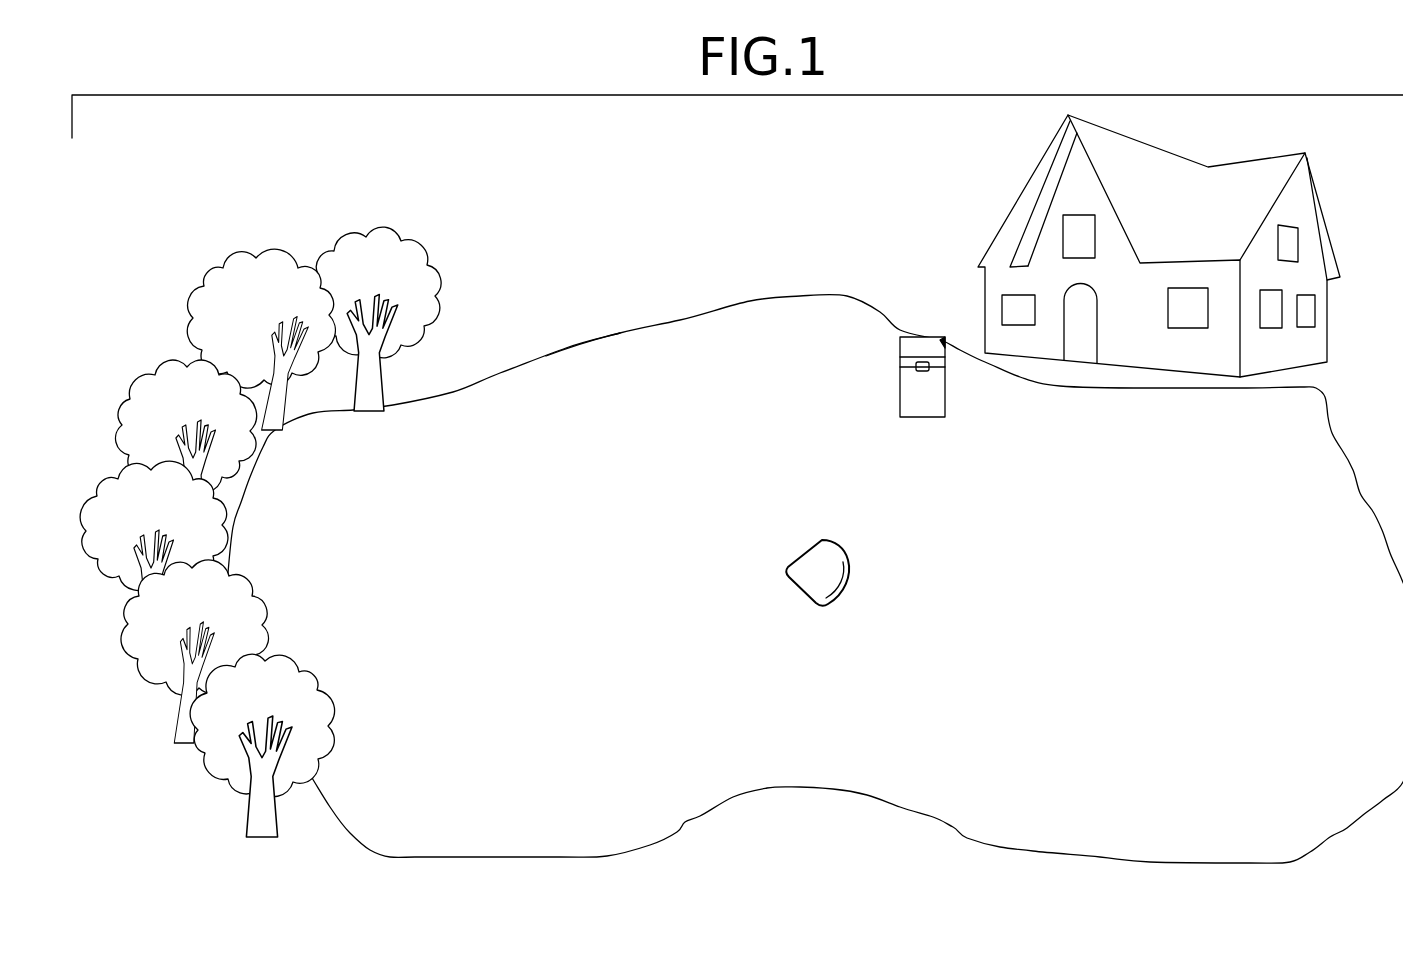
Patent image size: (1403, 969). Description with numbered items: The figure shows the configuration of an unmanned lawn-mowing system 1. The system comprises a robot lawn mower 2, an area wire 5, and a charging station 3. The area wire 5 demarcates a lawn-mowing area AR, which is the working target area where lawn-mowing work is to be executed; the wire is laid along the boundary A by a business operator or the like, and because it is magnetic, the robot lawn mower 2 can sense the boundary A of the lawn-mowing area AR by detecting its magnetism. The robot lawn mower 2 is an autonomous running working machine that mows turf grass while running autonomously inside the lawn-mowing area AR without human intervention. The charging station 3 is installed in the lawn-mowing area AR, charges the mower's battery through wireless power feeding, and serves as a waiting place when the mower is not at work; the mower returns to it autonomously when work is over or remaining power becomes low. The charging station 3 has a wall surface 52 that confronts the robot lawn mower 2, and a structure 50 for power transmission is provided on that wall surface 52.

The unmanned lawn-mowing system 1 is at (813, 216).
The robot lawn mower 2 is at (828, 562).
The charging station 3 is at (914, 369).
The area wire 5 is at (681, 316).
The structure for power transmission 50 is at (935, 355).
The wall surface 52 is at (946, 384).
The boundary A is at (566, 348).
The lawn-mowing area AR is at (651, 465).